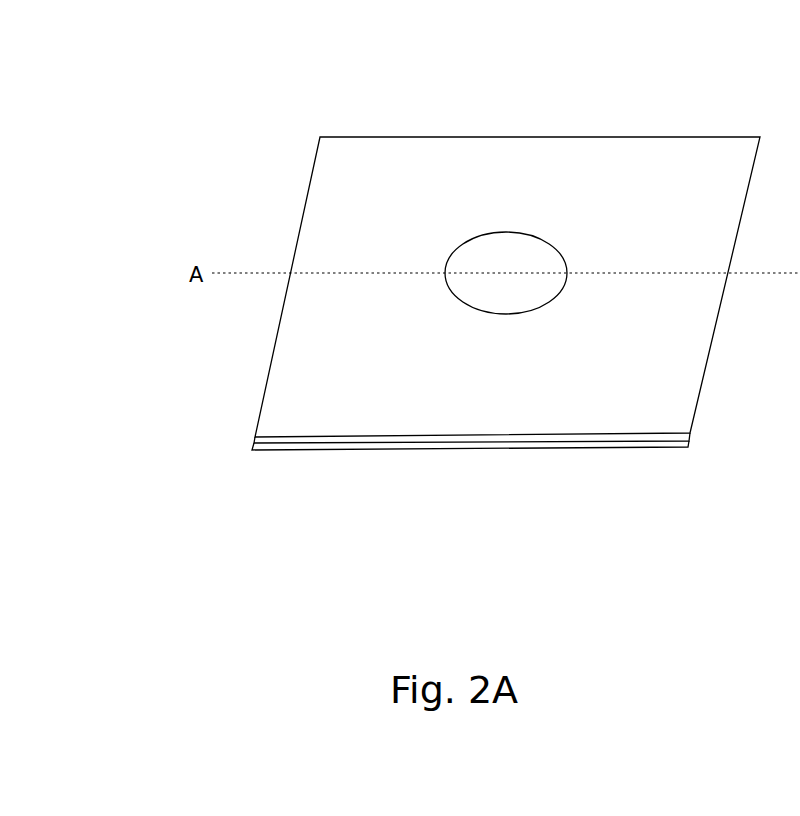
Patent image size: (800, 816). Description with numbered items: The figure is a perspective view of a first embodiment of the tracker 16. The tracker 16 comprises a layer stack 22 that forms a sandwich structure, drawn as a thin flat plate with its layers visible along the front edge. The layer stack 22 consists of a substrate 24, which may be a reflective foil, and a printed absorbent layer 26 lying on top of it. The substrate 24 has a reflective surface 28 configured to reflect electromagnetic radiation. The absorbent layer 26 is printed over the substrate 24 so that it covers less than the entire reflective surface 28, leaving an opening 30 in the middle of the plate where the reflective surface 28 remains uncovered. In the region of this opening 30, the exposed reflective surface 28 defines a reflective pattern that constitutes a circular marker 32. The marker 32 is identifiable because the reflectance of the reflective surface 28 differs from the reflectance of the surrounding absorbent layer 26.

The tracker 16 is at (262, 112).
The layer stack 22 is at (179, 408).
The substrate 24 is at (282, 447).
The printed absorbent layer 26 is at (283, 440).
The reflective surface 28 is at (546, 172).
The opening 30 is at (475, 232).
The marker 32 is at (510, 248).